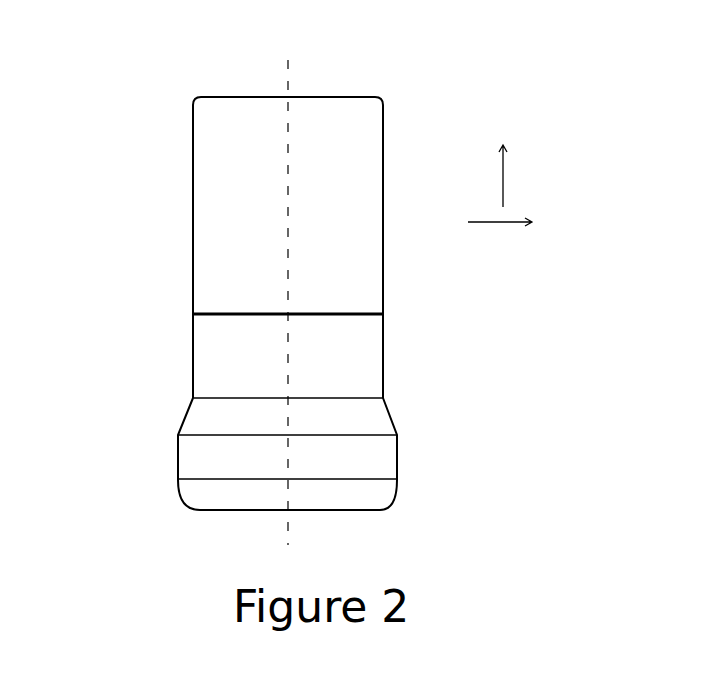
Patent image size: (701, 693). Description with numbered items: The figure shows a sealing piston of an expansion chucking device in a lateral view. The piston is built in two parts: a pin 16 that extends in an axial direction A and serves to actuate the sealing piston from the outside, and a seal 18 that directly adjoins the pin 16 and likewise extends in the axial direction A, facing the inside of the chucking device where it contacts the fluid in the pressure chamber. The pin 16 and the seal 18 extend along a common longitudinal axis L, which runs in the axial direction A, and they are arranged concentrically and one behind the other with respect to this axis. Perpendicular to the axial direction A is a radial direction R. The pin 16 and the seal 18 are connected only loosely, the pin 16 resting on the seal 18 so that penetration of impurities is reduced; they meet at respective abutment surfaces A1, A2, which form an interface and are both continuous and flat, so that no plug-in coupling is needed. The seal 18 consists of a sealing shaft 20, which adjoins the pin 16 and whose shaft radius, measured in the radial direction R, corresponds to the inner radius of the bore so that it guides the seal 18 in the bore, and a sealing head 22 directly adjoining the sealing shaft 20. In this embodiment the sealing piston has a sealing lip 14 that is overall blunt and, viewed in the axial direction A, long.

The sealing lip 14 is at (319, 305).
The pin 16 is at (118, 100).
The seal 18 is at (118, 310).
The sealing shaft 20 is at (523, 312).
The sealing head 22 is at (523, 398).
The abutment surface A1 is at (361, 313).
The abutment surface A2 is at (338, 315).
The longitudinal axis L is at (291, 82).
The axial direction A is at (507, 181).
The radial direction R is at (487, 223).